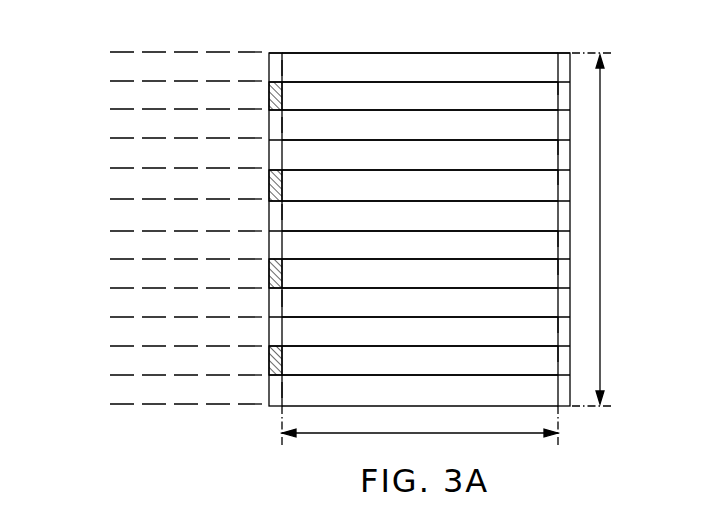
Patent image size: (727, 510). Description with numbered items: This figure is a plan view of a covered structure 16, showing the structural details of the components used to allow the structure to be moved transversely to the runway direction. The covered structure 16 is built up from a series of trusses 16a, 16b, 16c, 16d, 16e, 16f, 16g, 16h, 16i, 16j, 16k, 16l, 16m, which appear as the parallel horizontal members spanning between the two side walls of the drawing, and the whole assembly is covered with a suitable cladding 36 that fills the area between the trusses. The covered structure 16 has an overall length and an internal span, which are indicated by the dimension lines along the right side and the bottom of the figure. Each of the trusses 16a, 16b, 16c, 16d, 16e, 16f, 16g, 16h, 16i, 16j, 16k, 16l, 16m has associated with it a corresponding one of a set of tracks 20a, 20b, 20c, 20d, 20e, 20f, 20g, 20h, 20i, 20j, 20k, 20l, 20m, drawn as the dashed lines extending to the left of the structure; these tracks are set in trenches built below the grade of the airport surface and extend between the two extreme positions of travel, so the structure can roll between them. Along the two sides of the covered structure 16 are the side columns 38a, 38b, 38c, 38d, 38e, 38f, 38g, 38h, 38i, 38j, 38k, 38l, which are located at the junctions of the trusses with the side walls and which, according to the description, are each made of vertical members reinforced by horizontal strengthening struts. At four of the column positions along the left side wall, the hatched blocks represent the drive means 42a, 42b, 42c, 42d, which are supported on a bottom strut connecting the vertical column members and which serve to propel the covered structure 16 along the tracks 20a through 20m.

The covered structure 16 is at (476, 46).
The truss 16a is at (540, 53).
The truss 16b is at (546, 82).
The truss 16c is at (546, 110).
The truss 16d is at (546, 140).
The truss 16e is at (546, 170).
The truss 16f is at (546, 201).
The truss 16g is at (546, 231).
The truss 16h is at (546, 259).
The truss 16i is at (546, 288).
The truss 16j is at (546, 317).
The truss 16k is at (546, 346).
The truss 16l is at (546, 375).
The truss 16m is at (546, 406).
The track 20a is at (110, 52).
The track 20b is at (112, 81).
The track 20c is at (108, 109).
The track 20d is at (110, 138).
The track 20e is at (108, 168).
The track 20f is at (108, 199).
The track 20g is at (110, 231).
The track 20h is at (108, 259).
The track 20i is at (105, 288).
The track 20j is at (108, 317).
The track 20k is at (102, 346).
The track 20l is at (102, 375).
The track 20m is at (104, 404).
The cladding 36 is at (398, 188).
The side column 38a is at (282, 70).
The side column 38b is at (557, 87).
The side column 38c is at (283, 123).
The side column 38d is at (557, 147).
The side column 38e is at (557, 177).
The side column 38f is at (283, 210).
The side column 38g is at (557, 240).
The side column 38h is at (557, 265).
The side column 38i is at (283, 297).
The side column 38j is at (557, 325).
The side column 38k is at (557, 352).
The side column 38l is at (283, 388).
The drive means 42a is at (269, 87).
The drive means 42b is at (269, 177).
The drive means 42c is at (269, 265).
The drive means 42d is at (269, 353).